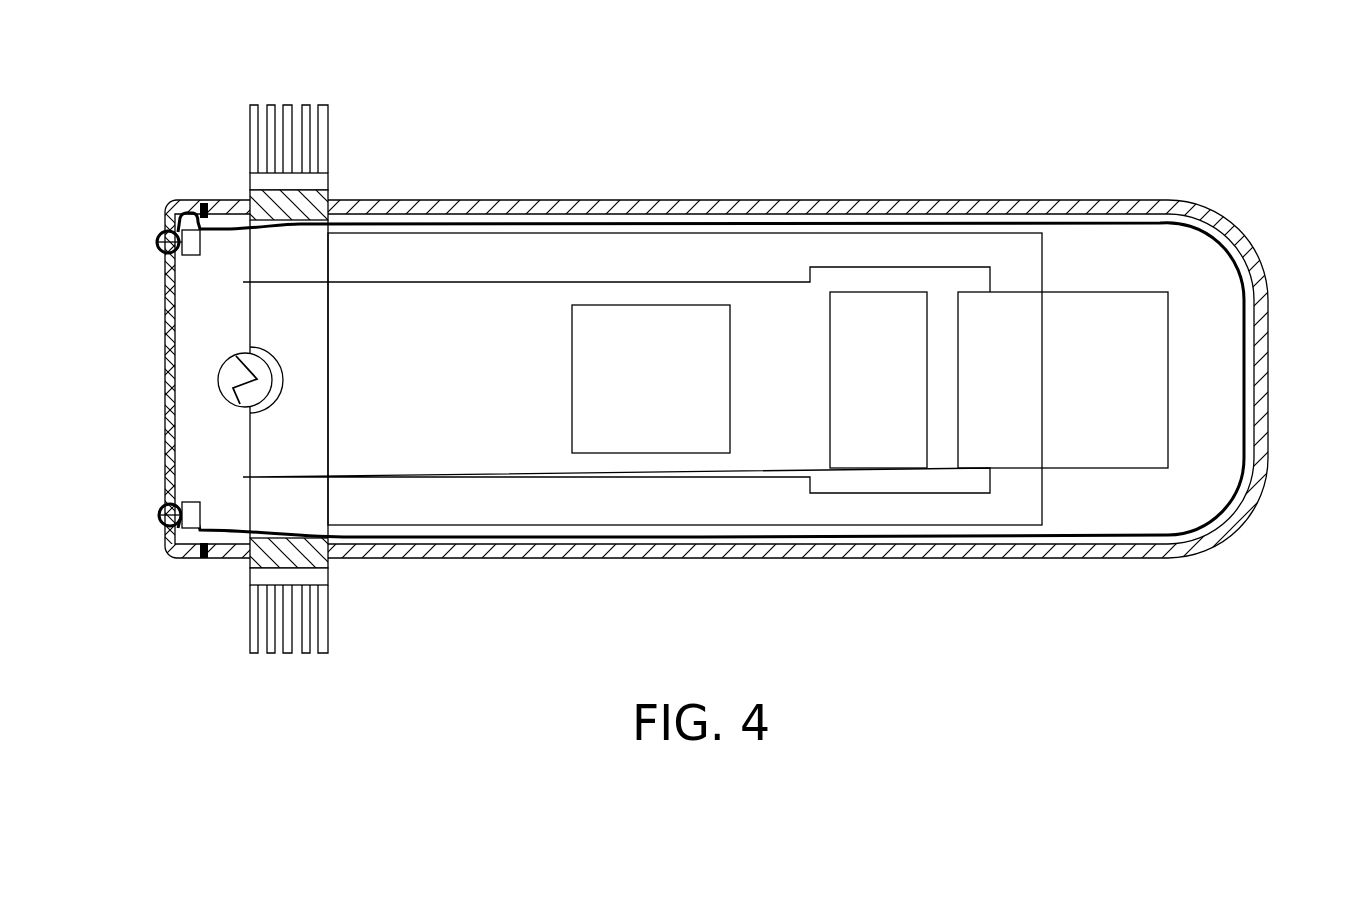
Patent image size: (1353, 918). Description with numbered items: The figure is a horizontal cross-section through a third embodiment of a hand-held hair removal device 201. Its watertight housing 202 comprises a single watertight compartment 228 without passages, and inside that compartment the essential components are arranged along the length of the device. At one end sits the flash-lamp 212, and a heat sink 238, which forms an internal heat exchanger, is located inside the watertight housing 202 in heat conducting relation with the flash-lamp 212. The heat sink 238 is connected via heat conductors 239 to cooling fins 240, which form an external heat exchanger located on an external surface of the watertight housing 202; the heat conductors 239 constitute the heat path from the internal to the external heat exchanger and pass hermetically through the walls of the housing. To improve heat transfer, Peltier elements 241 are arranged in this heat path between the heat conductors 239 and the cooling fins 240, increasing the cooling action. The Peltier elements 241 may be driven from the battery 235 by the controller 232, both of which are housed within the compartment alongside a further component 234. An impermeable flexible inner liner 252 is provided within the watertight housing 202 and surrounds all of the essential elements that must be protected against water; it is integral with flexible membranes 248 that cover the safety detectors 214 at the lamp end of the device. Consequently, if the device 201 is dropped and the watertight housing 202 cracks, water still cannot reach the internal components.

The hand-held hair removal device 201 is at (1265, 200).
The watertight housing 202 is at (1103, 550).
The flash-lamp 212 is at (225, 378).
The safety detectors 214 is at (160, 232).
The watertight compartment 228 is at (485, 325).
The controller 232 is at (883, 403).
The electronic component 234 is at (650, 400).
The battery 235 is at (1097, 337).
The heat sink 238 is at (308, 412).
The heat conductors 239 is at (318, 260).
The cooling fins 240 is at (327, 125).
The Peltier elements 241 is at (307, 193).
The flexible membranes 248 is at (165, 250).
The flexible inner liner 252 is at (722, 220).